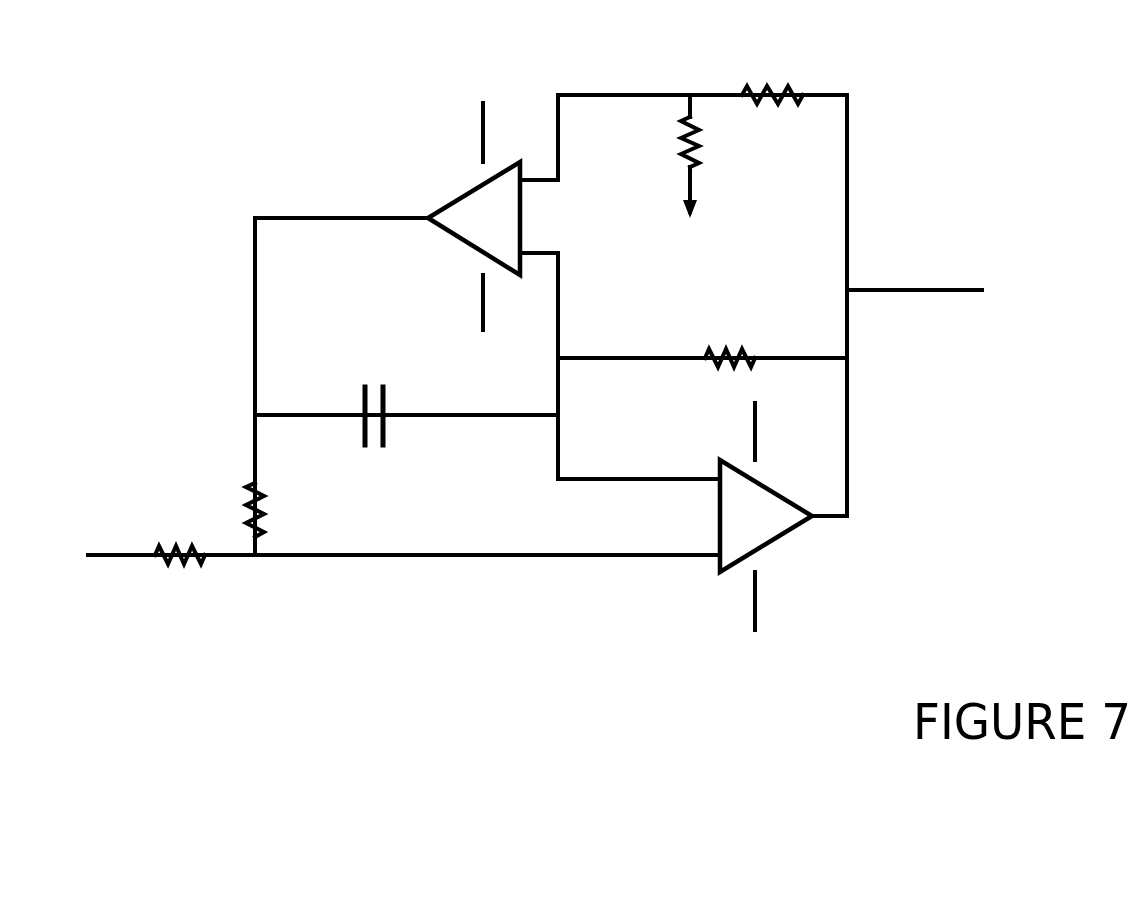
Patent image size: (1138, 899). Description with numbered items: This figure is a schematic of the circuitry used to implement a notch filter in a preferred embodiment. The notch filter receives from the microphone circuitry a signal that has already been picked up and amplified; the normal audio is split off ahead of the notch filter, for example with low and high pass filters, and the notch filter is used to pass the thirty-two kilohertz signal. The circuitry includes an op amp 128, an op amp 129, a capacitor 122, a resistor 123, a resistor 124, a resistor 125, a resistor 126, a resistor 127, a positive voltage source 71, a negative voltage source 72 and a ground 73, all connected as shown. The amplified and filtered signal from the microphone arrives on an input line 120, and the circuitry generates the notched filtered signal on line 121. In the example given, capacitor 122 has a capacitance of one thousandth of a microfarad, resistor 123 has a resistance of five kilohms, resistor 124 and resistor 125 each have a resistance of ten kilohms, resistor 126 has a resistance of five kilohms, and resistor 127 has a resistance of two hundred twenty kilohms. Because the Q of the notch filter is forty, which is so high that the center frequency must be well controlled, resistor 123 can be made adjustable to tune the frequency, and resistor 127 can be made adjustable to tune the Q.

The positive voltage source 71 is at (480, 128).
The negative voltage source 72 is at (480, 328).
The ground 73 is at (676, 219).
The input line 120 is at (111, 560).
The line 121 is at (950, 280).
The capacitor 122 is at (375, 378).
The resistor 123 is at (233, 513).
The resistor 124 is at (668, 145).
The resistor 125 is at (784, 63).
The resistor 126 is at (737, 319).
The resistor 127 is at (180, 570).
The op amp 128 is at (439, 201).
The op amp 129 is at (705, 518).